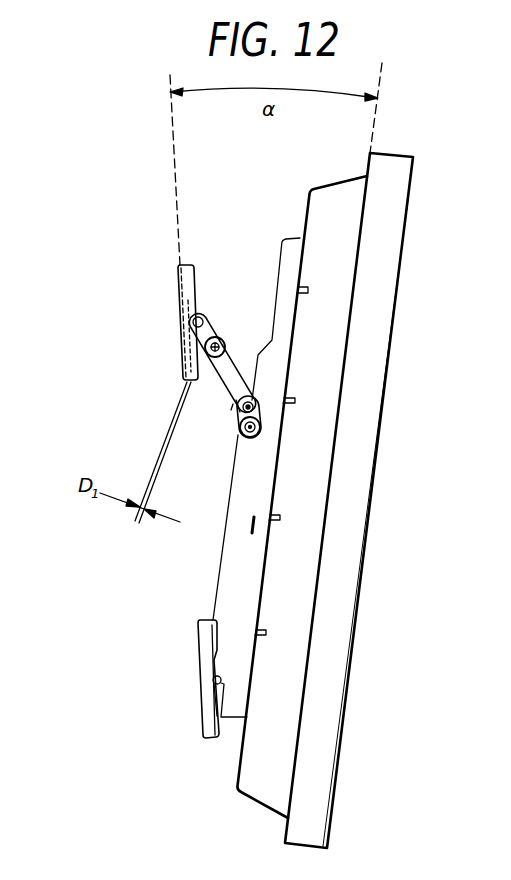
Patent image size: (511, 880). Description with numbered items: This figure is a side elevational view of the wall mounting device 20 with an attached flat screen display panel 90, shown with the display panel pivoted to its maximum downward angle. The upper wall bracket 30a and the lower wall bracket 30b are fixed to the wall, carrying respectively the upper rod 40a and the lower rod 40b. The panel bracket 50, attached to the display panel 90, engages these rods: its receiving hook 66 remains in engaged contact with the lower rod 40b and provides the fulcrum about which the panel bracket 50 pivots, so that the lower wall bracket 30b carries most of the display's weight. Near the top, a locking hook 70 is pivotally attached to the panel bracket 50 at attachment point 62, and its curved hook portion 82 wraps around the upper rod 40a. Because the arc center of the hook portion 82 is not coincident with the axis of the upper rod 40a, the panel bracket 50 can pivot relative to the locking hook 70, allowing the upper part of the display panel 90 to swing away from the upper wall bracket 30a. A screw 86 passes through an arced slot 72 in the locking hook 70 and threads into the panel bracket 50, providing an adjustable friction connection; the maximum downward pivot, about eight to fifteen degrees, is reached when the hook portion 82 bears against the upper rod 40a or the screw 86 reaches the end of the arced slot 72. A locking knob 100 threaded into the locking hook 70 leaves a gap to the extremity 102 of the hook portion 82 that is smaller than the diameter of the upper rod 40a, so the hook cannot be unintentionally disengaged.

The wall mounting device 20 is at (217, 548).
The upper wall bracket 30a is at (182, 265).
The lower wall bracket 30b is at (200, 621).
The upper rod 40a is at (195, 318).
The lower rod 40b is at (211, 678).
The panel bracket 50 is at (293, 252).
The pivotal attachment point 62 is at (259, 432).
The receiving hook 66 is at (210, 692).
The locking hook 70 is at (256, 398).
The arced slot 72 is at (235, 415).
The hook portion 82 is at (207, 315).
The screw 86 is at (232, 397).
The flat screen display panel 90 is at (387, 175).
The locking knob 100 is at (225, 345).
The extremity of the hook portion 102 is at (180, 347).